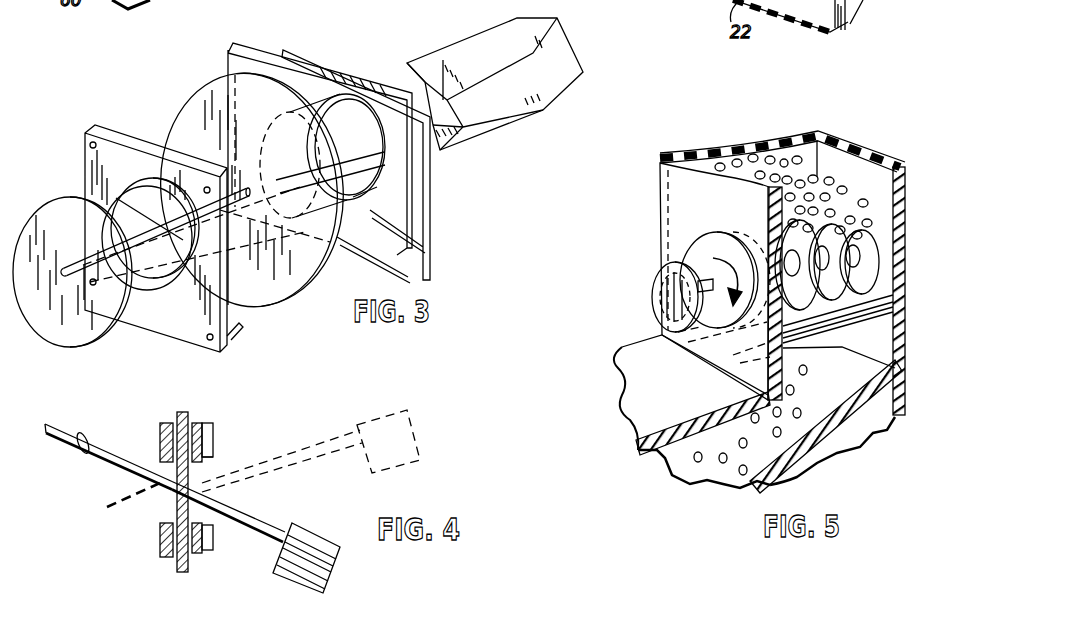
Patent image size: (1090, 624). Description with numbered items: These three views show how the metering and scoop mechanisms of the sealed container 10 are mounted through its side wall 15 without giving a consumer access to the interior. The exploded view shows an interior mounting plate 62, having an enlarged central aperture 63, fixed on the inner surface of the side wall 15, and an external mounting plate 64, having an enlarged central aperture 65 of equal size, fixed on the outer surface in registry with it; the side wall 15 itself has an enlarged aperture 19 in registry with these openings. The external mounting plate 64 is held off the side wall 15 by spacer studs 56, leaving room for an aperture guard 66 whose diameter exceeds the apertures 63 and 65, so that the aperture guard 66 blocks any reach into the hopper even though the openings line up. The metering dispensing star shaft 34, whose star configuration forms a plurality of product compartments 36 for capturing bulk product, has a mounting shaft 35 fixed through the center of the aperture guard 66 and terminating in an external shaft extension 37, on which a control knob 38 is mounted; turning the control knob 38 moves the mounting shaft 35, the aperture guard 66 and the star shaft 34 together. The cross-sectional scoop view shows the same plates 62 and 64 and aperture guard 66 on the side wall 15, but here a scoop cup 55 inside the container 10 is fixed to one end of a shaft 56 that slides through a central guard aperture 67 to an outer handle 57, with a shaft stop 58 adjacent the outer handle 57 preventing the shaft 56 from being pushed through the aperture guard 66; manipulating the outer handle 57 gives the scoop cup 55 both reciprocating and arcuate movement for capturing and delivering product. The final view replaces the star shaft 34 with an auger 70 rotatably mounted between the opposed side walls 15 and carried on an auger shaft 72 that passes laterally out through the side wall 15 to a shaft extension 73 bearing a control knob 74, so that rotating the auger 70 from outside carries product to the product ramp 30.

In FIG. 5, the container 10 is at (762, 137).
In FIG. 3, the side wall 15 is at (252, 50).
In FIG. 4, the side wall 15 is at (200, 425).
In FIG. 5, the side wall 15 is at (677, 188).
In FIG. 4, the enlarged aperture 19 is at (205, 517).
In FIG. 5, the first product ramp 30 is at (840, 379).
In FIG. 3, the star shaft 34 is at (428, 48).
In FIG. 3, the mounting shaft 35 is at (343, 155).
In FIG. 3, the product compartment 36 is at (473, 43).
In FIG. 3, the external shaft extension 37 is at (80, 307).
In FIG. 3, the control knob 38 is at (50, 200).
In FIG. 4, the scoop cup 55 is at (340, 568).
In FIG. 3, the shaft 56 is at (240, 323).
In FIG. 4, the shaft 56 is at (250, 510).
In FIG. 4, the outer handle 57 is at (60, 442).
In FIG. 4, the shaft stop 58 is at (80, 455).
In FIG. 3, the interior mounting plate 62 is at (377, 77).
In FIG. 4, the interior mounting plate 62 is at (213, 438).
In FIG. 3, the enlarged central aperture 63 is at (363, 200).
In FIG. 4, the enlarged central aperture 63 is at (213, 463).
In FIG. 3, the external mounting plate 64 is at (117, 133).
In FIG. 4, the external mounting plate 64 is at (162, 430).
In FIG. 3, the enlarged central aperture 65 is at (152, 277).
In FIG. 4, the enlarged central aperture 65 is at (160, 478).
In FIG. 3, the aperture guard 66 is at (283, 275).
In FIG. 4, the aperture guard 66 is at (182, 415).
In FIG. 4, the central guard aperture 67 is at (107, 507).
In FIG. 5, the auger 70 is at (858, 232).
In FIG. 5, the auger shaft 72 is at (897, 290).
In FIG. 5, the shaft extension 73 is at (663, 332).
In FIG. 5, the control knob 74 is at (657, 277).